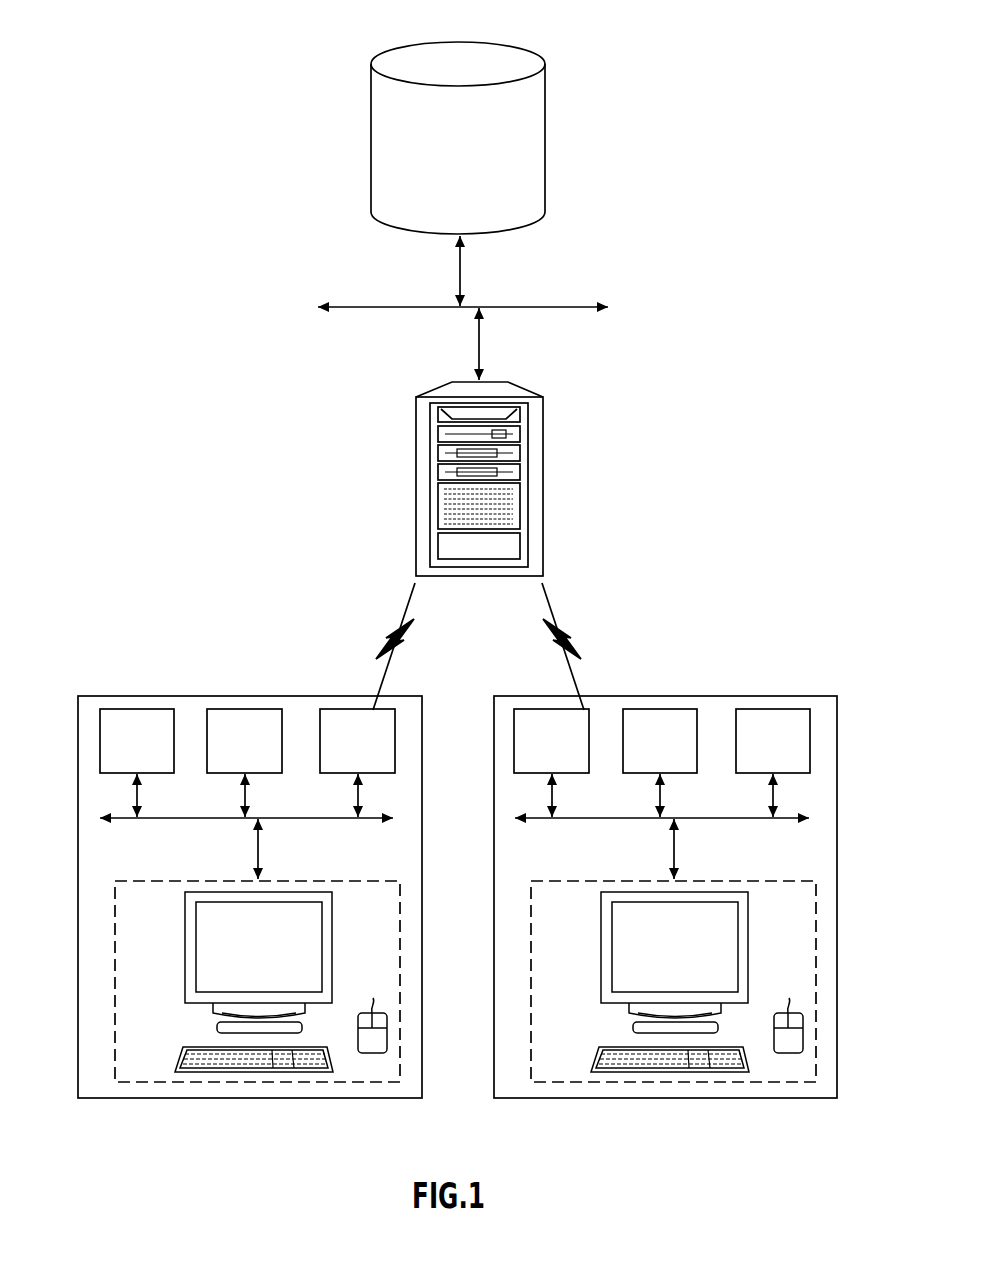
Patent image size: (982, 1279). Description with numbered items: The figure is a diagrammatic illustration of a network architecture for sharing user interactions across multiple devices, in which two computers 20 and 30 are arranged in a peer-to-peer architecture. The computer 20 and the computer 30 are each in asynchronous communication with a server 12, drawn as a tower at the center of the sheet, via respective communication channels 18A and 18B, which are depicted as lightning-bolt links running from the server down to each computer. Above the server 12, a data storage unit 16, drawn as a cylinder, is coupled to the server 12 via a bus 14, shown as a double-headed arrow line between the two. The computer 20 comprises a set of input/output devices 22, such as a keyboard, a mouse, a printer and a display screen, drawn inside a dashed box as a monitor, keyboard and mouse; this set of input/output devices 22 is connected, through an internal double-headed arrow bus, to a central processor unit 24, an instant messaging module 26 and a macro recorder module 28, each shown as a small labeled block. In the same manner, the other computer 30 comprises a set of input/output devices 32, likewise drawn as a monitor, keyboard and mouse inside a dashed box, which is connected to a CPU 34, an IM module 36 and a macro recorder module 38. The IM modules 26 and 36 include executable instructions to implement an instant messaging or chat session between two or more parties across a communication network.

The server 12 is at (545, 468).
The bus 14 is at (530, 307).
The data storage unit 16 is at (508, 44).
The communication channel 18A is at (396, 610).
The communication channel 18B is at (556, 610).
The computer 20 is at (259, 893).
The set of input/output devices 22 is at (378, 1083).
The central processor unit 24 is at (122, 752).
The instant messaging module 26 is at (230, 752).
The macro recorder module 28 is at (343, 752).
The computer 30 is at (667, 893).
The set of input/output devices 32 is at (777, 1083).
The central processor unit 34 is at (758, 752).
The instant messaging module 36 is at (645, 752).
The macro recorder module 38 is at (537, 752).